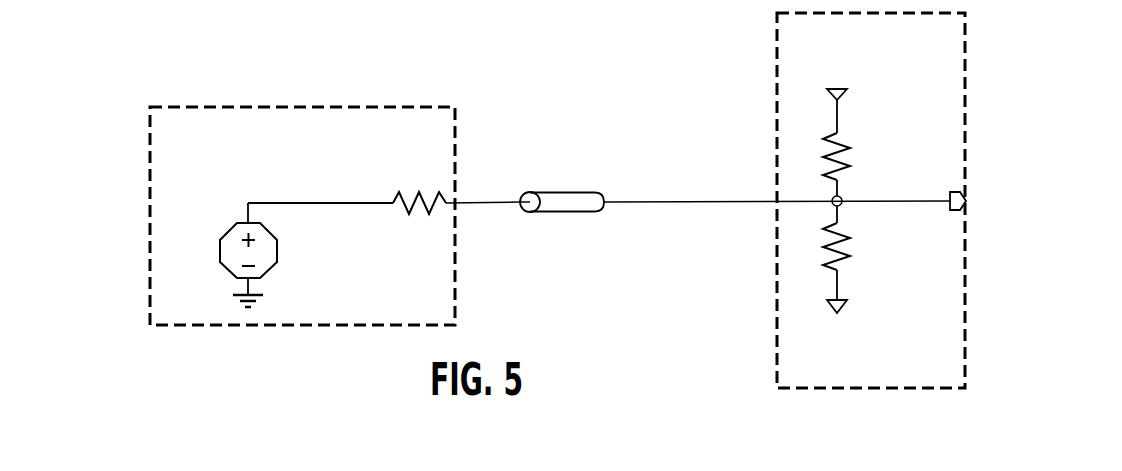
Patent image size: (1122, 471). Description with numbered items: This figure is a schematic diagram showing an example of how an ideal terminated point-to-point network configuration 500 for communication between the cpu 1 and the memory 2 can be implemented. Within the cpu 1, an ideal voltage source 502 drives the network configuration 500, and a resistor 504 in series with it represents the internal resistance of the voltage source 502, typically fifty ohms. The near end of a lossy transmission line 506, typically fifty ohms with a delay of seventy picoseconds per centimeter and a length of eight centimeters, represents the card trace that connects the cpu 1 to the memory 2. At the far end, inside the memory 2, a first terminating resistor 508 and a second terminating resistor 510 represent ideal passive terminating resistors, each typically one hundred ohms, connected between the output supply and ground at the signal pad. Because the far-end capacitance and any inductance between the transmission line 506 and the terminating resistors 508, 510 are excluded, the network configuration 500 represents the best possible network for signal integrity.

The ideal terminated point-to-point network configuration 500 is at (547, 116).
The cpu 1 is at (302, 194).
The memory 2 is at (941, 200).
The ideal voltage source E1 502 is at (220, 250).
The resistor R1 504 is at (413, 194).
The TX1 lossy transmission line 506 is at (565, 193).
The Rterm1 terminating resistor 508 is at (848, 141).
The Rterm2 terminating resistor 510 is at (848, 242).